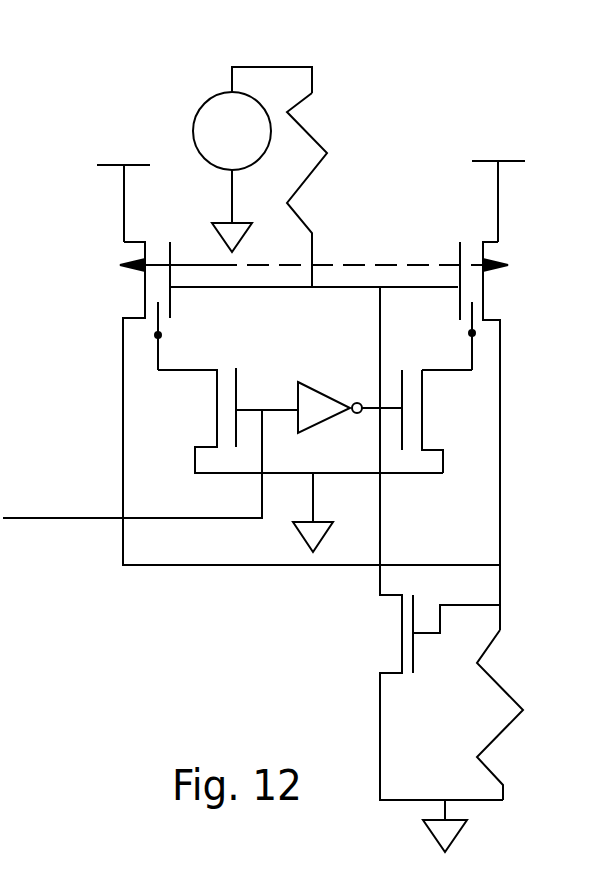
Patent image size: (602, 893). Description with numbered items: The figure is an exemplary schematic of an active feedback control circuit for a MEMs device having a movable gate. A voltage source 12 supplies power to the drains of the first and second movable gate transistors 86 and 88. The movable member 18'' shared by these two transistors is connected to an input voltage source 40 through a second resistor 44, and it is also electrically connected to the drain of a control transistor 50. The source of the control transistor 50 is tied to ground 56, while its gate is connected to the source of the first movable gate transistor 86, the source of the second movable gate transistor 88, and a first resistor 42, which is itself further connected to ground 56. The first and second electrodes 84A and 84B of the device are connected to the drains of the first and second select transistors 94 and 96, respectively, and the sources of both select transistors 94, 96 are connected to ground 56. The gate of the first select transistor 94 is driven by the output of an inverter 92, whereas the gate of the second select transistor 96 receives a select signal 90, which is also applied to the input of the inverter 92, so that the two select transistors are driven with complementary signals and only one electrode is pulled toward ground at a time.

The voltage source VDD 12 is at (100, 167).
The movable member 18'' is at (314, 306).
The input voltage source 40 is at (216, 92).
The resistor R1 42 is at (502, 735).
The resistor R2 44 is at (322, 148).
The control transistor T2 50 is at (385, 672).
The ground 56 is at (240, 243).
The first electrode 84A is at (458, 233).
The second electrode 84B is at (164, 237).
The first movable gate transistor T1' 86 is at (492, 313).
The second movable gate transistor T1" 88 is at (132, 316).
The select signal 90 is at (132, 464).
The inverter 92 is at (313, 381).
The first select transistor T3' 94 is at (430, 448).
The second select transistor T3" 96 is at (240, 380).